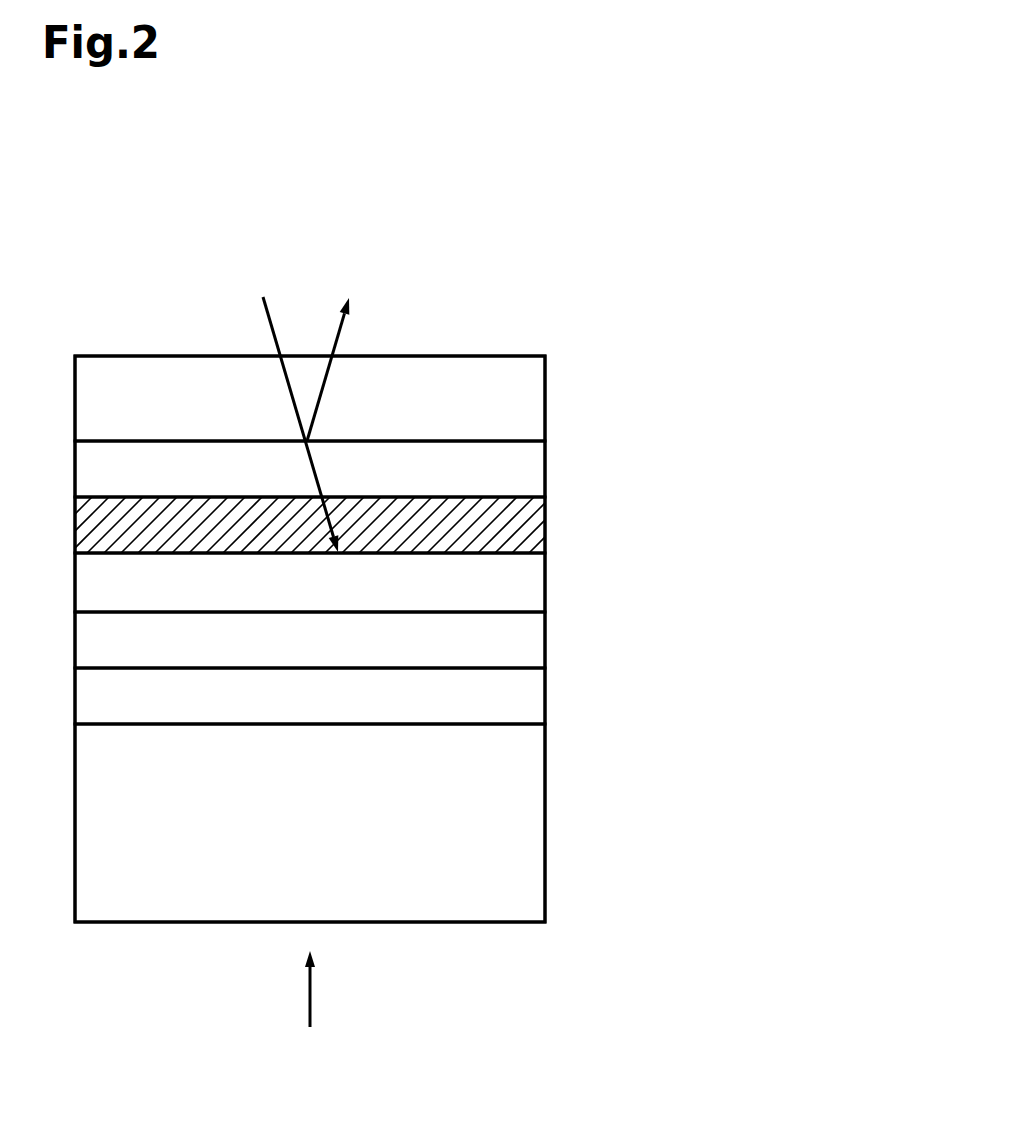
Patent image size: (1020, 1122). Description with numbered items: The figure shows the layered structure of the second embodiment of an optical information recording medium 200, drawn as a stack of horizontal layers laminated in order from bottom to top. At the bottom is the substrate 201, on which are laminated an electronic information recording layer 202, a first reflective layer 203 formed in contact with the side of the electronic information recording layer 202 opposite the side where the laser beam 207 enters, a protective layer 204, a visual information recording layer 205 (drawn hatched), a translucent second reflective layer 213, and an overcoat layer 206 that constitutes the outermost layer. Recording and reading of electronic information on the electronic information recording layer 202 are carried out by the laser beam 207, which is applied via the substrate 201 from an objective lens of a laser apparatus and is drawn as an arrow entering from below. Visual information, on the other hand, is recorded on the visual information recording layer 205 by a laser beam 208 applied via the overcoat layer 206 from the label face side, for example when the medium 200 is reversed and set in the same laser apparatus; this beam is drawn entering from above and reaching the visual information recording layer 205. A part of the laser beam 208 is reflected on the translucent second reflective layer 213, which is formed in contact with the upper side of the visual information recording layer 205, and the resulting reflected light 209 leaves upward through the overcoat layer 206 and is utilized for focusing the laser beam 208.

The optical information recording medium 200 is at (457, 197).
The substrate 201 is at (528, 826).
The electronic information recording layer 202 is at (528, 699).
The first reflective layer 203 is at (528, 642).
The protective layer 204 is at (528, 587).
The visual information recording layer 205 is at (528, 530).
The overcoat layer 206 is at (528, 404).
The laser beam 207 is at (317, 1012).
The laser beam 208 is at (250, 396).
The reflected light 209 is at (424, 340).
The translucent second reflective layer 213 is at (528, 475).